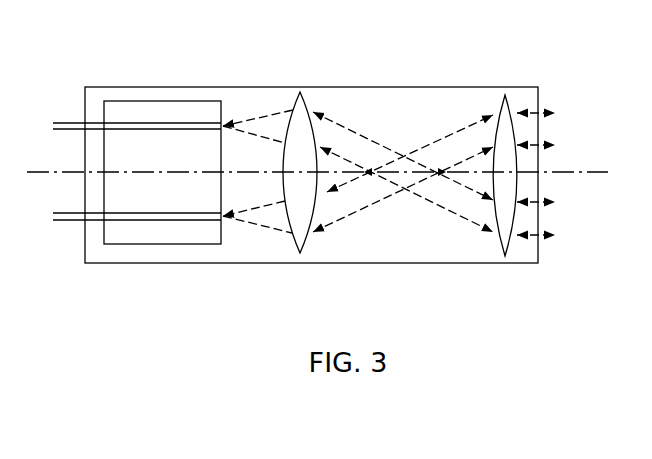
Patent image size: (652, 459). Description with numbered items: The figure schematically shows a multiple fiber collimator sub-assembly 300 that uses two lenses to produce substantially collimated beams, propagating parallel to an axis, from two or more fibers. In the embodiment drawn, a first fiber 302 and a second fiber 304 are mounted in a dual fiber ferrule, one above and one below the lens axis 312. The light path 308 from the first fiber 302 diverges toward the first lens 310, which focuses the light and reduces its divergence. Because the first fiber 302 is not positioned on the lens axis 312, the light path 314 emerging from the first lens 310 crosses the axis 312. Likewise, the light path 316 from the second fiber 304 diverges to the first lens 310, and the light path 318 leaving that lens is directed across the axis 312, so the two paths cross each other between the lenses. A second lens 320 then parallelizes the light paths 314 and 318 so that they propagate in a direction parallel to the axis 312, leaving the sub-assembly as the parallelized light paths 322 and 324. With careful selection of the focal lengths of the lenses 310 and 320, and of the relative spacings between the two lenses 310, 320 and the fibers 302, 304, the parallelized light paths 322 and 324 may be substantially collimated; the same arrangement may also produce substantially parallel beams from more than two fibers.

The collimator sub-assembly 300 is at (165, 87).
The first fiber 302 is at (70, 122).
The second fiber 304 is at (70, 222).
The light path from the first fiber 308 is at (255, 118).
The first lens 310 is at (305, 100).
The lens axis 312 is at (568, 178).
The light path emerging from the first lens 314 is at (348, 128).
The light path from the second fiber 316 is at (257, 225).
The light path from the lens 318 is at (457, 132).
The second lens 320 is at (507, 90).
The parallelized light path 322 is at (550, 240).
The parallelized light path 324 is at (548, 110).